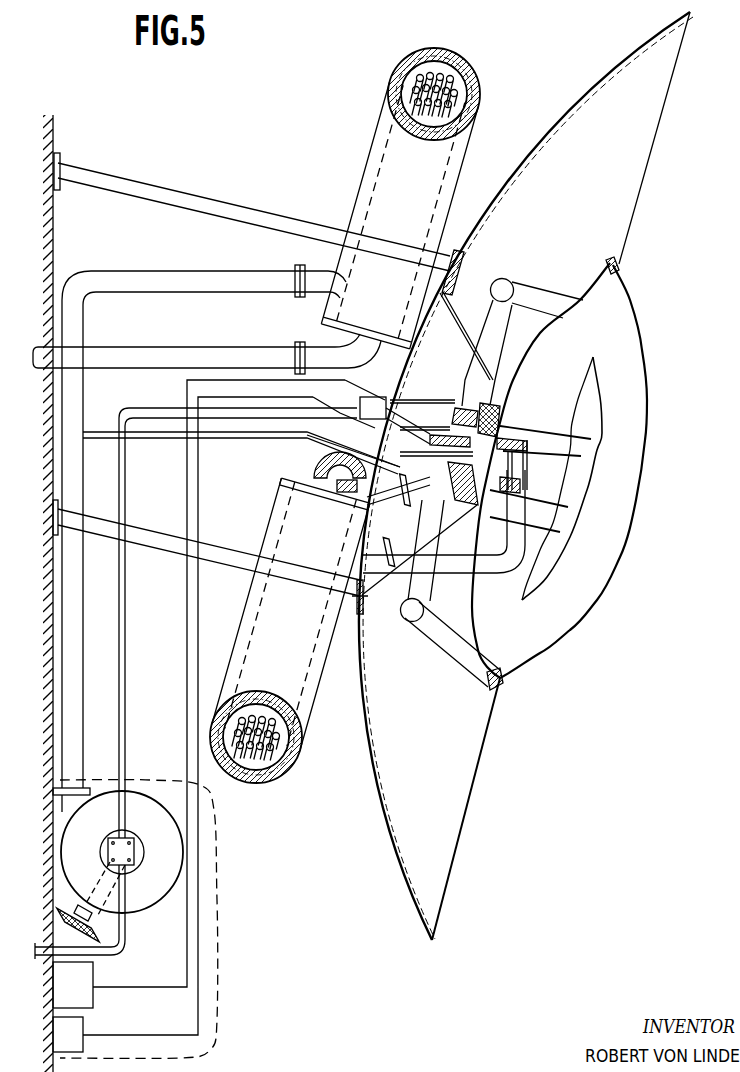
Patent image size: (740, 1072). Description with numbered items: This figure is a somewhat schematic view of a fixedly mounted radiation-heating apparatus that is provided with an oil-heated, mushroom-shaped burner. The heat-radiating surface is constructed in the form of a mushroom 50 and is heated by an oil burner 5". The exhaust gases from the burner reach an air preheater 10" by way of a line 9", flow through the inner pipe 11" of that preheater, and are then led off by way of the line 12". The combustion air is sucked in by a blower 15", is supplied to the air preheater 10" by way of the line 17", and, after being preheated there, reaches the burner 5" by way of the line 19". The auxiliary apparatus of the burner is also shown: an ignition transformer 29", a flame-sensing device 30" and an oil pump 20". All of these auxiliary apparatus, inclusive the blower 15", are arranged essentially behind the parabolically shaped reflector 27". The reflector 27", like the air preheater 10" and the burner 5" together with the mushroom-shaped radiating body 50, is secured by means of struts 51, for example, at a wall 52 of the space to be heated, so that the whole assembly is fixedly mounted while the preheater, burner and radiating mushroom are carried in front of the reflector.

The oil burner 5 is at (495, 418).
The line 9 is at (322, 468).
The air preheater 10 is at (292, 522).
The inner pipe 11 is at (290, 756).
The line 12 is at (235, 354).
The blower 15 is at (126, 908).
The line 17 is at (181, 281).
The line 19 is at (467, 575).
The oil pump 20 is at (138, 862).
The parabolically shaped reflector 27 is at (386, 822).
The ignition transformer 29 is at (84, 978).
The flame-sensing device 30 is at (72, 1032).
The mushroom-shaped radiating body 50 is at (581, 617).
The struts 51 is at (152, 184).
The wall 52 is at (48, 221).